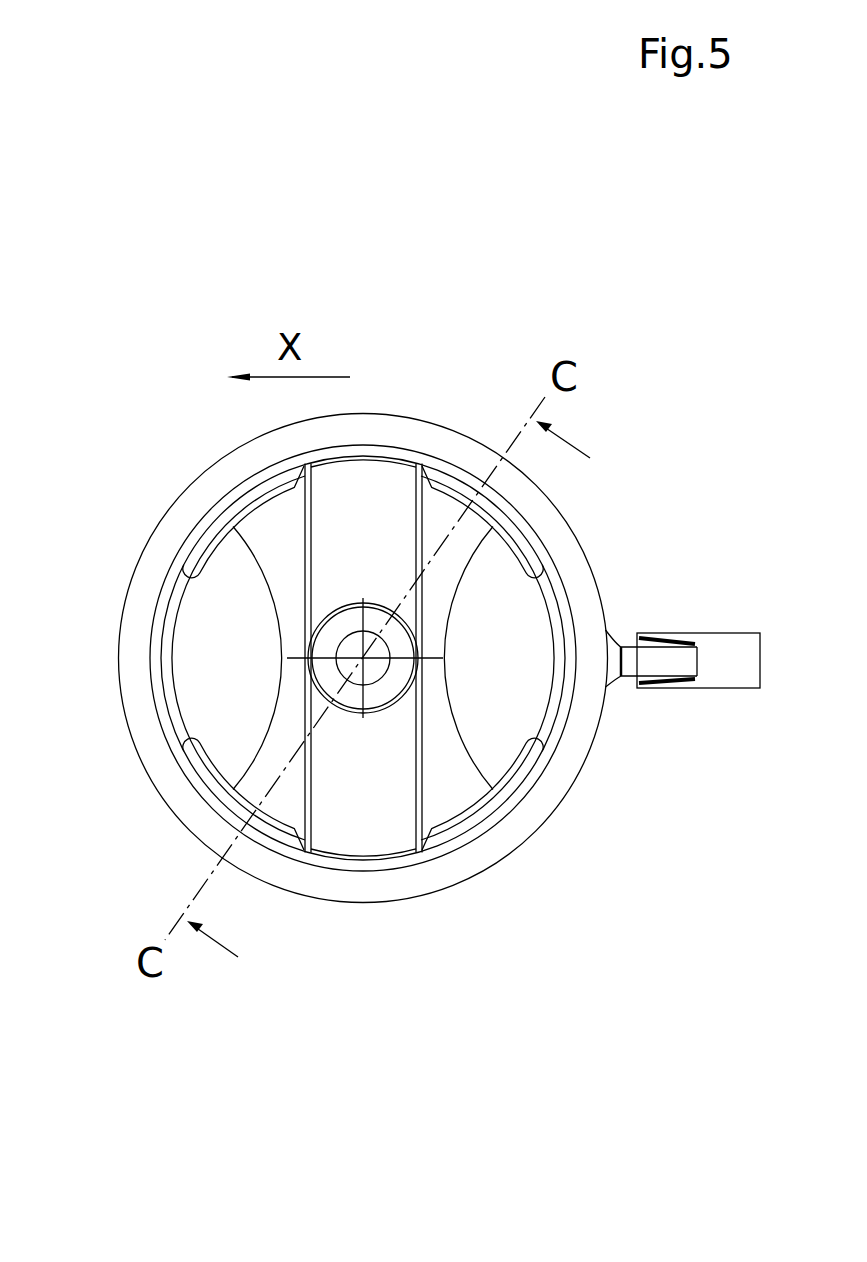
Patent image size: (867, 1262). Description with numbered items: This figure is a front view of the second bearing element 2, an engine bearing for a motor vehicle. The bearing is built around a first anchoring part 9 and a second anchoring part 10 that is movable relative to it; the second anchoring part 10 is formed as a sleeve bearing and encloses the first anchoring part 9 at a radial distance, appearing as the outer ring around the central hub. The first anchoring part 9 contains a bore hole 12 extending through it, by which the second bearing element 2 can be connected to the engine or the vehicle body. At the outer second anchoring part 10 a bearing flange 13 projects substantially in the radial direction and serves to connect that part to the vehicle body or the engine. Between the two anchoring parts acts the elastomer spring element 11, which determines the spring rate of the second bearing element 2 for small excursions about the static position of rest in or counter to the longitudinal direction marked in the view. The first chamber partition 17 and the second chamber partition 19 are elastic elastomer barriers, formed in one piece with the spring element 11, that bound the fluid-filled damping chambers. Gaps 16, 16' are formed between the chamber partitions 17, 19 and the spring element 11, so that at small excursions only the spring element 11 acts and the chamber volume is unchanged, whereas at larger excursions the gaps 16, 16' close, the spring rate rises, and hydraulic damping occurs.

The second bearing element 2 is at (446, 937).
The first anchoring part 9 is at (388, 684).
The second anchoring part 10 is at (549, 786).
The spring element 11 is at (365, 497).
The bore hole 12 is at (368, 675).
The bearing flange 13 is at (725, 668).
The gap 16 is at (482, 708).
The gap 16' is at (243, 712).
The first chamber partition 17 is at (517, 647).
The second chamber partition 19 is at (224, 686).